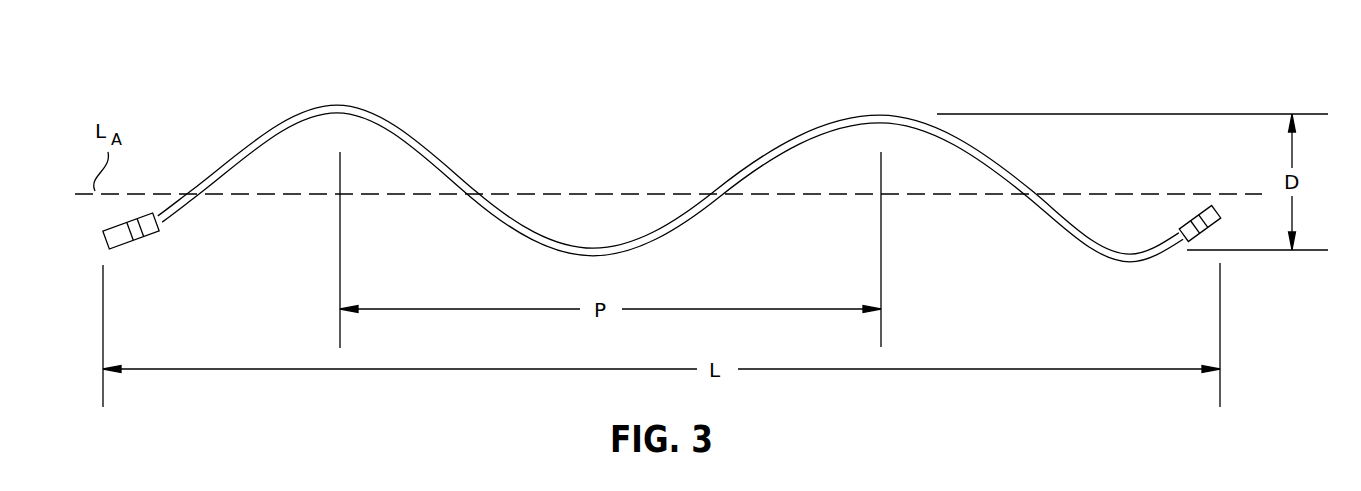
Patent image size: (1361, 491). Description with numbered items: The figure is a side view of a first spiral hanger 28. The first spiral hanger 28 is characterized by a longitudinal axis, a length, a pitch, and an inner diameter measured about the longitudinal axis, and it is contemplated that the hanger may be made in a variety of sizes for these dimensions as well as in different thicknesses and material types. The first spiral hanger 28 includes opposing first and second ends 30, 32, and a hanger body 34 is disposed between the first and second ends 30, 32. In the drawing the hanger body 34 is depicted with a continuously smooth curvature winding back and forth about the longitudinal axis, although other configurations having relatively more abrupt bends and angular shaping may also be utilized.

The first spiral hanger 28 is at (561, 103).
The first end 30 is at (127, 240).
The second end 32 is at (1187, 227).
The hanger body 34 is at (453, 176).